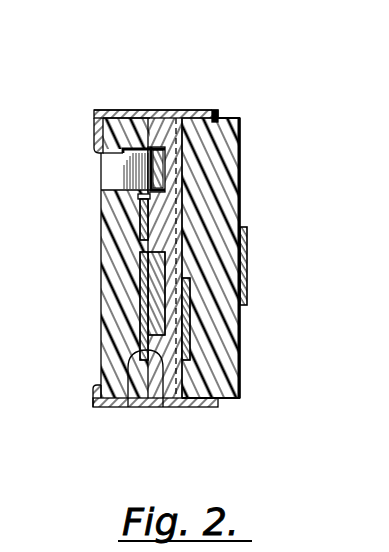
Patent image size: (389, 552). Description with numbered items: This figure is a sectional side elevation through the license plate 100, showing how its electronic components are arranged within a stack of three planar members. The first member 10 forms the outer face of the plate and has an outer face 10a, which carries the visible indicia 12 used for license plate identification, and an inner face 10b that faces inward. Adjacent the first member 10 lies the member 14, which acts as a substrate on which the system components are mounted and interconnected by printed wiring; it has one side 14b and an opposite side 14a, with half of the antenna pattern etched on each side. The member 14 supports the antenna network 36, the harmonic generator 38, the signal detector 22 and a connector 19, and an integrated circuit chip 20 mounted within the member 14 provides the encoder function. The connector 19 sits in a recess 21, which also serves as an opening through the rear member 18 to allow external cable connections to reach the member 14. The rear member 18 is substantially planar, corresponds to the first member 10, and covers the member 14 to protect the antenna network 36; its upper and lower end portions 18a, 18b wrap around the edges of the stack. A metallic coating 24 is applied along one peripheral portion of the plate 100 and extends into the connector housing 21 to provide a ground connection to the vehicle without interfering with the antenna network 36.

The license plate 100 is at (258, 38).
The first member 10 is at (234, 120).
The outer face 10a is at (240, 149).
The inner face 10b is at (228, 117).
The visible indicia 12 is at (247, 284).
The member 14 is at (161, 110).
The opposite side of the board 14a is at (170, 110).
The one side of the board 14b is at (154, 110).
The rear member 18 is at (105, 316).
The shell upper end 18a is at (135, 110).
The shell lower end 18b is at (100, 345).
The connector 19 is at (172, 165).
The integrated circuit chip 20 is at (160, 400).
The recess 21 is at (268, 213).
The signal detector 22 is at (140, 221).
The metallic coating 24 is at (96, 131).
The antenna network 36 is at (268, 340).
The harmonic generator 38 is at (143, 257).